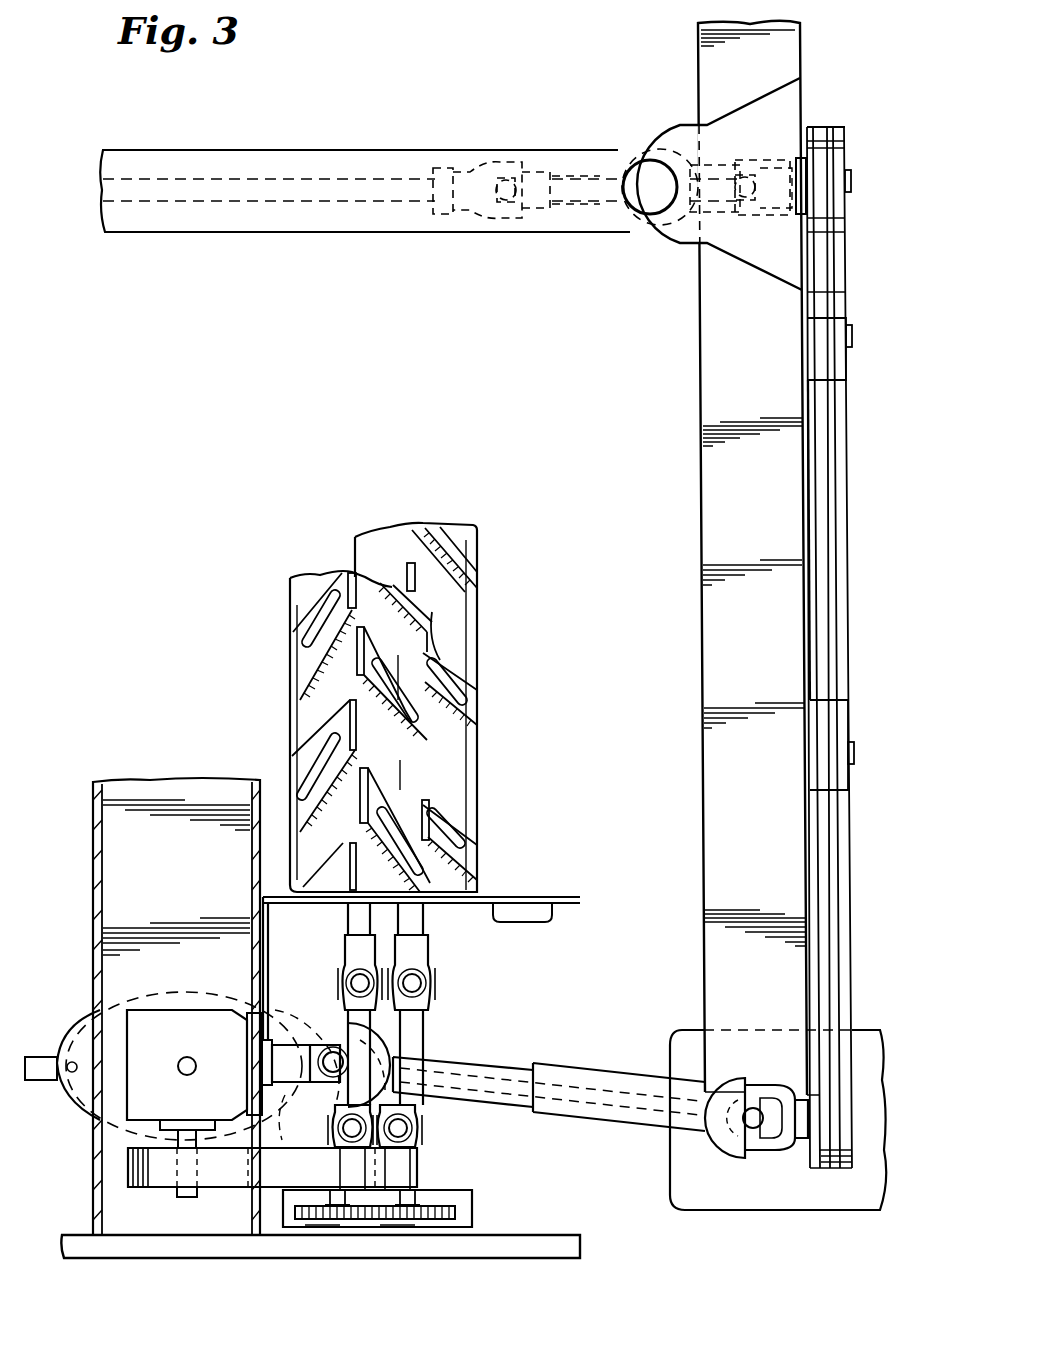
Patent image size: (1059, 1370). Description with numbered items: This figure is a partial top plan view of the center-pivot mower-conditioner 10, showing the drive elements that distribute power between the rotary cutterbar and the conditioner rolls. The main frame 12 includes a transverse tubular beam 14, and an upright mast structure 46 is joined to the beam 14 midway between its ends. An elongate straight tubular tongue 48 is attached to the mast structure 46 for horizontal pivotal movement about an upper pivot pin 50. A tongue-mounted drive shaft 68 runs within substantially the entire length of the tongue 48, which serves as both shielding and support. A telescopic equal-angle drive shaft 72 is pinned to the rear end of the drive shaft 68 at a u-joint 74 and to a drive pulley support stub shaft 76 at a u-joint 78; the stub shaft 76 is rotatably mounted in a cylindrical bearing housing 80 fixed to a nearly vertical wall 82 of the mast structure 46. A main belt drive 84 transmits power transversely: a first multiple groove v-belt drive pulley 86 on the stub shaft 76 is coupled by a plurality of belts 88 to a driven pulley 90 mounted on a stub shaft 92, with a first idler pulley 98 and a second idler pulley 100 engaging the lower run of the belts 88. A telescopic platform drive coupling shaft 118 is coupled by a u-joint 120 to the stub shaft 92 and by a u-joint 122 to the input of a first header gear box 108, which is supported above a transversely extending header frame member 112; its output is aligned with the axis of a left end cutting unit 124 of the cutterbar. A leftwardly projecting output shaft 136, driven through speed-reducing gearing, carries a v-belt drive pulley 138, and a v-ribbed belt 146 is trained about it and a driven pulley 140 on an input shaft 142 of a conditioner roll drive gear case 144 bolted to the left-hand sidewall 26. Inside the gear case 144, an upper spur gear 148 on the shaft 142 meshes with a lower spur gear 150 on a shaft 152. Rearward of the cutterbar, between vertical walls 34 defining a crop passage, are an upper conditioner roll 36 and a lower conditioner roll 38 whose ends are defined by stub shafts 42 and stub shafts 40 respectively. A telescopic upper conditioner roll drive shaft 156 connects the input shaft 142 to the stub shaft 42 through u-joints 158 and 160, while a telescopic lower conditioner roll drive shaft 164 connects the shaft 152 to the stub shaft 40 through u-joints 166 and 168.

The center-pivot mower-conditioner 10 is at (344, 277).
The main frame 12 is at (698, 376).
The transverse tubular beam 14 is at (700, 462).
The sidewall 26 is at (545, 1260).
The vertical wall 34 is at (522, 896).
The upper conditioner roll 36 is at (295, 590).
The lower conditioner roll 38 is at (480, 556).
The stub shaft 40 is at (426, 918).
The stub shaft 42 is at (348, 920).
The upright mast structure 46 is at (692, 128).
The tongue 48 is at (162, 236).
The upper pivot pin 50 is at (642, 205).
The tongue-mounted drive shaft 68 is at (345, 178).
The telescopic equal-angle drive shaft 72 is at (583, 178).
The u-joint 74 is at (495, 225).
The drive pulley support stub shaft 76 is at (795, 165).
The u-joint 78 is at (740, 215).
The cylindrical bearing housing 80 is at (793, 212).
The nearly vertical wall 82 is at (808, 150).
The main belt drive 84 is at (860, 468).
The first multiple groove v-belt drive pulley 86 is at (852, 132).
The belt 88 is at (812, 518).
The multiple groove v-belt driven pulley 90 is at (815, 1062).
The stub shaft 92 is at (812, 1152).
The first idler pulley 98 is at (808, 362).
The second idler pulley 100 is at (808, 812).
The first header gear box 108 is at (188, 1049).
The header frame member 112 is at (190, 860).
The telescopic platform drive coupling shaft 118 is at (612, 1075).
The u-joint 120 is at (752, 1158).
The u-joint 122 is at (340, 1035).
The left end cutting unit 124 is at (70, 1008).
The output shaft 136 is at (195, 1127).
The v-belt drive pulley 138 is at (250, 1195).
The v-belt driven pulley 140 is at (305, 1090).
The input shaft 142 is at (272, 1167).
The conditioner roll drive gear case 144 is at (445, 1232).
The v-ribbed belt 146 is at (125, 1163).
The upper spur gear 148 is at (320, 1228).
The lower spur gear 150 is at (395, 1228).
The shaft 152 is at (425, 1200).
The telescopic upper conditioner roll drive shaft 156 is at (405, 1023).
The u-joint 158 is at (405, 1115).
The u-joint 160 is at (344, 978).
The telescopic lower conditioner roll drive shaft 164 is at (420, 1050).
The u-joint 166 is at (418, 1140).
The u-joint 168 is at (432, 968).